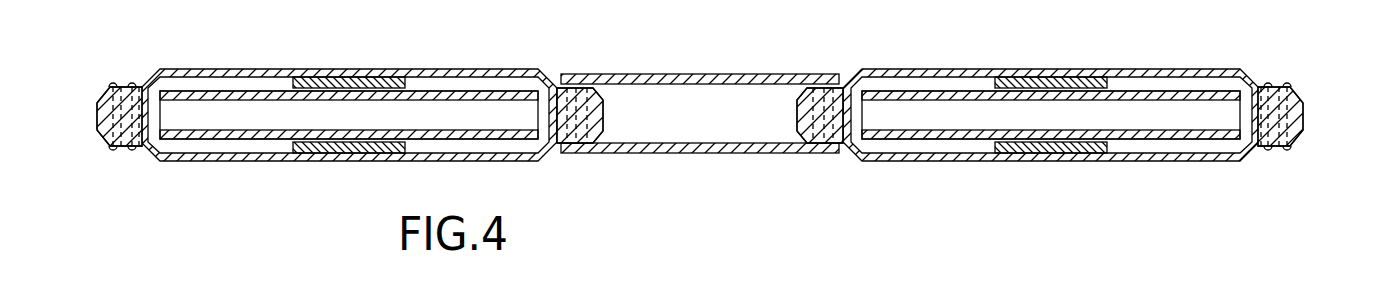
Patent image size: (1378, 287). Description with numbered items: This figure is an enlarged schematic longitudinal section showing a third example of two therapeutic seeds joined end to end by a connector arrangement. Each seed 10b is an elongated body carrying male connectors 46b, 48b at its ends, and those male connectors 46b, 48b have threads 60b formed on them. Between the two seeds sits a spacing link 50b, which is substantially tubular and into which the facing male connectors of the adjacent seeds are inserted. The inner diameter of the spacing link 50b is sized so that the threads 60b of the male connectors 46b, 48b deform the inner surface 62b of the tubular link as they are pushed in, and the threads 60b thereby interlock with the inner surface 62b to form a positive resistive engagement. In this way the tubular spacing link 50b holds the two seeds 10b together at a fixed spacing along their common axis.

The seed 10b is at (370, 74).
The male connector 46b is at (105, 114).
The male connector 48b is at (598, 118).
The spacing link 50b is at (711, 74).
The threads 60b is at (133, 86).
The inner surface 62b is at (664, 118).